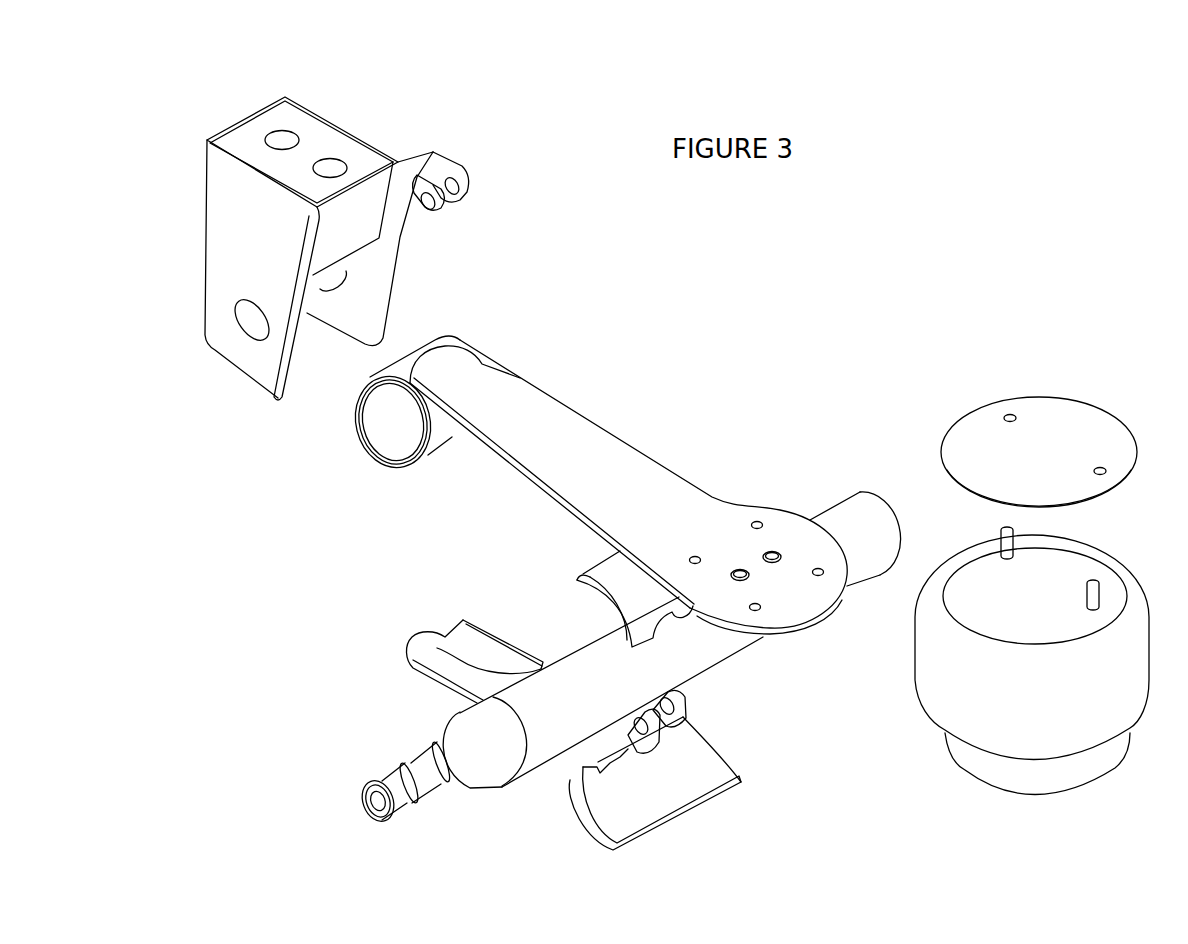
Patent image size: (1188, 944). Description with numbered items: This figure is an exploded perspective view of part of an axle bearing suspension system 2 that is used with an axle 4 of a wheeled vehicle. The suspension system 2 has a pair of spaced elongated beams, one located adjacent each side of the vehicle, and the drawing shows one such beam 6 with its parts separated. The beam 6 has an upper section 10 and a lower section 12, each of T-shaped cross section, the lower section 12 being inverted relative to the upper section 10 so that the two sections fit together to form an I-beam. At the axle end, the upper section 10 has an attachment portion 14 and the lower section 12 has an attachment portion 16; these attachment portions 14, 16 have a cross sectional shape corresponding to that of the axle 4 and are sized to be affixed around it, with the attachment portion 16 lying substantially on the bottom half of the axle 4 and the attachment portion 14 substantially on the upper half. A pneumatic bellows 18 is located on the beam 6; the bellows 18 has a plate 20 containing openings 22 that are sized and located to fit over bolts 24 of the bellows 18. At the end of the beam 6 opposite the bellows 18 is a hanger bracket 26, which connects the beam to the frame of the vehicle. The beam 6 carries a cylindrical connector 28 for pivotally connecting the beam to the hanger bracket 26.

The axle bearing suspension system 2 is at (702, 276).
The axle 4 is at (848, 515).
The elongated beam 6 is at (672, 490).
The upper section 10 is at (527, 417).
The lower section 12 is at (570, 755).
The attachment portion 14 is at (620, 572).
The attachment portion 16 is at (682, 778).
The pneumatic bellows 18 is at (938, 683).
The plate 20 is at (1075, 428).
The openings 22 is at (1010, 413).
The bolts 24 is at (1092, 583).
The hanger bracket 26 is at (325, 137).
The cylindrical connector 28 is at (377, 428).